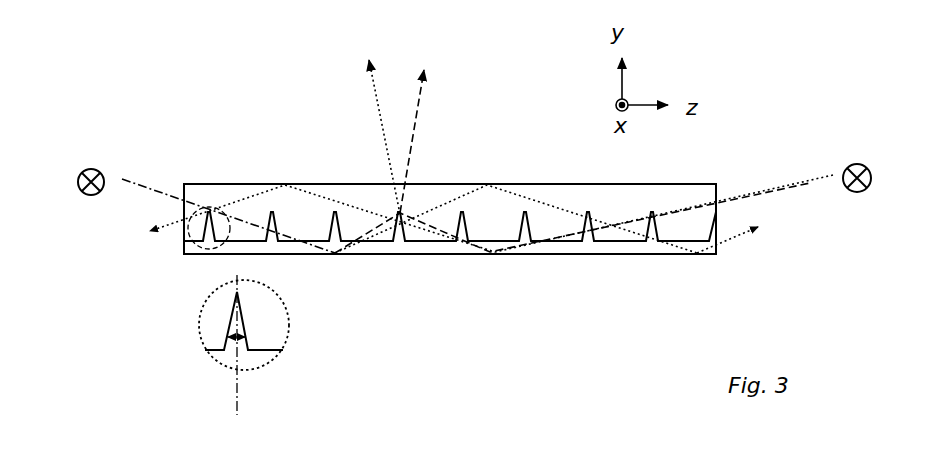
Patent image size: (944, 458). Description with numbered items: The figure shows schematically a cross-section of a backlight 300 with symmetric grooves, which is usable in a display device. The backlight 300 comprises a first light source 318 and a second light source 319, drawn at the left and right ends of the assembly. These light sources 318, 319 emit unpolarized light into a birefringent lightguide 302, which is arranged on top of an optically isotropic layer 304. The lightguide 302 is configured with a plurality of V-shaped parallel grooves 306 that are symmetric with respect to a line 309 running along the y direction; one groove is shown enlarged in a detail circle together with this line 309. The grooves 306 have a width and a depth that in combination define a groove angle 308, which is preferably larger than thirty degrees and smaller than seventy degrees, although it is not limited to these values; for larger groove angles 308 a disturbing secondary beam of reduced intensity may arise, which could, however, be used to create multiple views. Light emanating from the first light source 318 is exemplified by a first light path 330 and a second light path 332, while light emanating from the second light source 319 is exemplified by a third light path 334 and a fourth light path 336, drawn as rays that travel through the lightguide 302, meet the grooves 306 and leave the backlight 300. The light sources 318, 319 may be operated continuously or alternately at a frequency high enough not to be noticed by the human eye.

The backlight 300 is at (505, 170).
The birefringent lightguide 302 is at (640, 193).
The optically isotropic layer 304 is at (604, 256).
The V-shaped parallel grooves 306 is at (527, 222).
The groove angle 308 is at (240, 340).
The line 309 is at (237, 412).
The first light source 318 is at (90, 168).
The second light source 319 is at (858, 163).
The first light path 330 is at (160, 191).
The second light path 332 is at (420, 105).
The third light path 334 is at (160, 234).
The fourth light path 336 is at (373, 104).